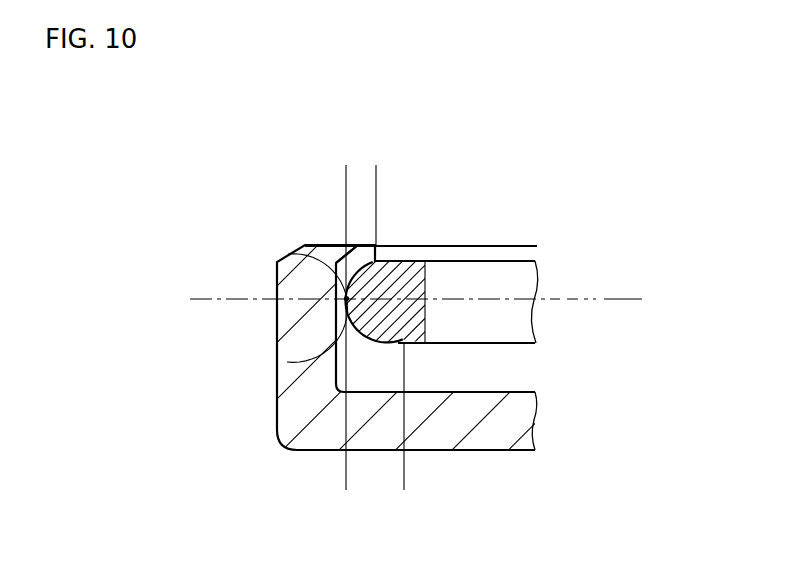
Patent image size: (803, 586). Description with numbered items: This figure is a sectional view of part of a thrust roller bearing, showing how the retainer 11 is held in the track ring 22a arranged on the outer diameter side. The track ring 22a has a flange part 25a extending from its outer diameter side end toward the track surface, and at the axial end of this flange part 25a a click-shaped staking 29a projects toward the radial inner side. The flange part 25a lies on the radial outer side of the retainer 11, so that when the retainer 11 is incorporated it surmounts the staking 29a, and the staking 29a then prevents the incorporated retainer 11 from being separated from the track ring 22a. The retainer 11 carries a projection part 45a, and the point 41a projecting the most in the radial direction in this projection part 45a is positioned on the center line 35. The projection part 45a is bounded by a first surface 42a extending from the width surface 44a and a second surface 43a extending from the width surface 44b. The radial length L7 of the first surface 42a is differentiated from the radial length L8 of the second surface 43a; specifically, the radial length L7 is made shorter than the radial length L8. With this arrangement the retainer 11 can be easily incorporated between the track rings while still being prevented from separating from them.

The retainer 11 is at (506, 230).
The track ring 22a is at (508, 438).
The flange part 25a is at (290, 343).
The staking 29a is at (343, 254).
The center line 35 is at (621, 300).
The point 41a is at (345, 300).
The first surface 42a is at (288, 254).
The second surface 43a is at (287, 363).
The width surface 44a is at (440, 260).
The width surface 44b is at (453, 344).
The projection part 45a is at (343, 294).
The radial length of first surface L7 is at (385, 176).
The radial length of second surface L8 is at (404, 480).